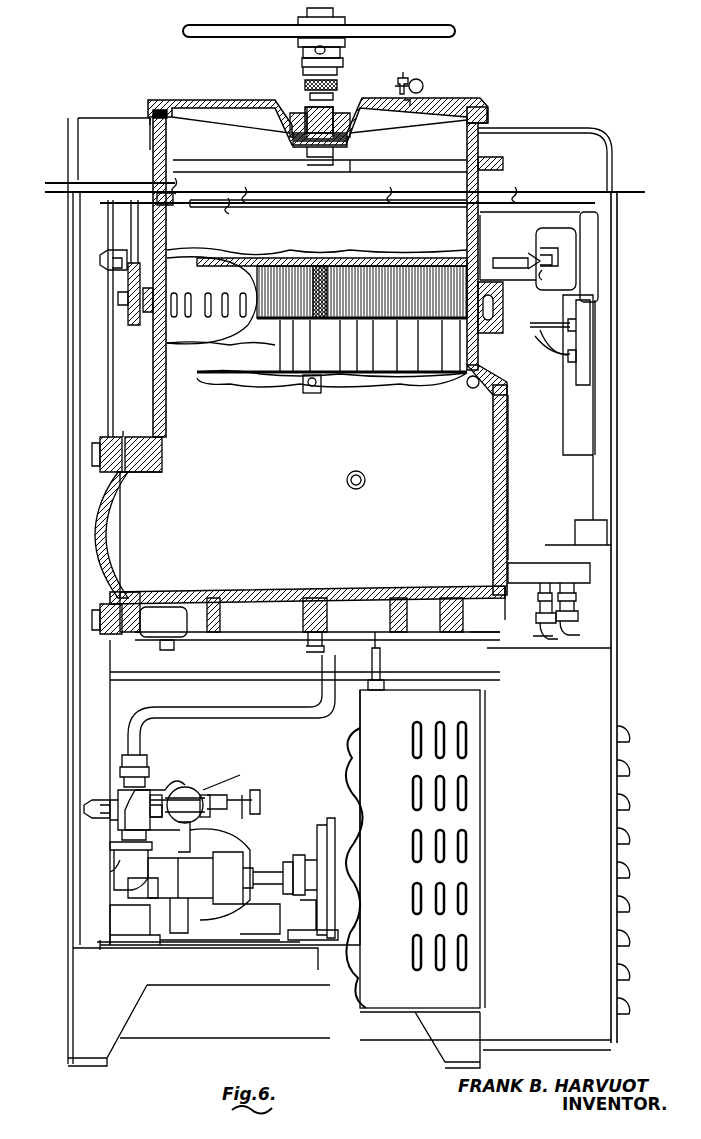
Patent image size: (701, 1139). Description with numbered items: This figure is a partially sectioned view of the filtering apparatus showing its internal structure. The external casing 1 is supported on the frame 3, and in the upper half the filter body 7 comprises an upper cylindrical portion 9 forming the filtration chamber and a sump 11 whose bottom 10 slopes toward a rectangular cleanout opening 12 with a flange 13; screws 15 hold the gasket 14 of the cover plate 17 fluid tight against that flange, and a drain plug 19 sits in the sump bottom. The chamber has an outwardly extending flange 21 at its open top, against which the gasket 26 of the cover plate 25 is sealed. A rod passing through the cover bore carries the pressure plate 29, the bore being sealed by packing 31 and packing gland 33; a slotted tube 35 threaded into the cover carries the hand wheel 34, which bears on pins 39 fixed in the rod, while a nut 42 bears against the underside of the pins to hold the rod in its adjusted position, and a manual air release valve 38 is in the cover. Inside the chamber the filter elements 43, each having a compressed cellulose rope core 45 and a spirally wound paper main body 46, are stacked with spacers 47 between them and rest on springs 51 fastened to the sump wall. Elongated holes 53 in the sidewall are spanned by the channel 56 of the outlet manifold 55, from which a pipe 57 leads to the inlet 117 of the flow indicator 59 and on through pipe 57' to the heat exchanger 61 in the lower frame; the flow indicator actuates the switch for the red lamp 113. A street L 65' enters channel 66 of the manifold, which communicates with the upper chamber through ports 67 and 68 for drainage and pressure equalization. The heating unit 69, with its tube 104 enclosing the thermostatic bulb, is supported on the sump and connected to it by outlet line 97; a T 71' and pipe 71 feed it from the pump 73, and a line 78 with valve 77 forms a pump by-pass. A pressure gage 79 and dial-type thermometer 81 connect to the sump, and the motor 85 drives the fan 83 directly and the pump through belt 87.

The external casing 1 is at (74, 160).
The frame 3 is at (608, 490).
The filter body 7 is at (166, 410).
The upper cylindrical portion 9 is at (467, 230).
The bottom 10 is at (394, 592).
The sump 11 is at (354, 466).
The cleanout opening 12 is at (136, 470).
The flange 13 is at (133, 625).
The gasket 14 is at (124, 600).
The screws 15 is at (92, 451).
The cover plate 17 is at (88, 527).
The drain plug 19 is at (306, 643).
The outwardly extending flange 21 is at (506, 170).
The cover plate 25 is at (212, 100).
The gasket 26 is at (148, 118).
The pressure plate 29 is at (432, 168).
The packing 31 is at (290, 128).
The packing gland 33 is at (340, 146).
The hand wheel 34 is at (455, 34).
The slotted tube 35 is at (336, 85).
The manual air release valve 38 is at (414, 74).
The pins 39 is at (332, 54).
The nut 42 is at (302, 62).
The filter elements 43 is at (416, 272).
The compressed cellulose rope core 45 is at (325, 320).
The main body 46 is at (432, 321).
The spacers 47 is at (266, 259).
The springs 51 is at (468, 380).
The elongated holes 53 is at (239, 296).
The outlet manifold 55 is at (538, 324).
The channel 56 is at (150, 316).
The pipe 57 is at (519, 251).
The pipe 57' is at (390, 788).
The flow indicator 59 is at (586, 245).
The heat exchanger 61 is at (422, 849).
The street L 65' is at (81, 265).
The channel 66 is at (134, 219).
The port 67 is at (170, 206).
The port 68 is at (161, 276).
The heating unit 69 is at (554, 500).
The pipe 71 is at (363, 685).
The T 71' is at (98, 817).
The pump 73 is at (122, 868).
The valve 77 is at (226, 794).
The line 78 is at (191, 840).
The pressure gage 79 is at (590, 326).
The dial-type thermometer 81 is at (590, 351).
The fan 83 is at (356, 776).
The motor 85 is at (218, 780).
The belt 87 is at (324, 820).
The outlet line 97 is at (362, 482).
The tube 104 is at (528, 638).
The red lamp 113 is at (616, 418).
The inlet 117 is at (557, 271).